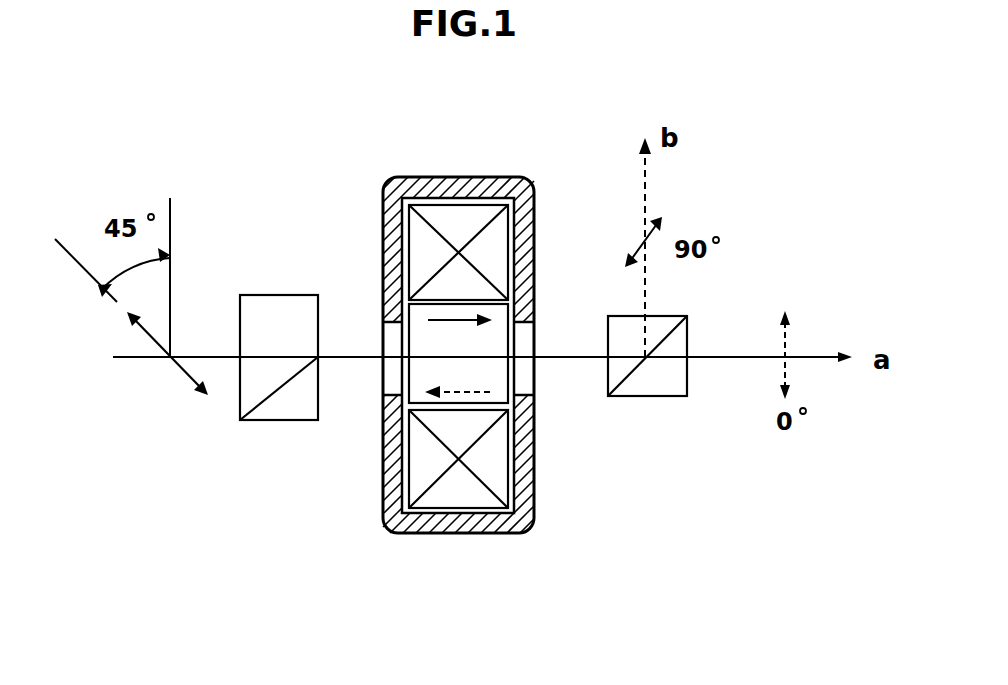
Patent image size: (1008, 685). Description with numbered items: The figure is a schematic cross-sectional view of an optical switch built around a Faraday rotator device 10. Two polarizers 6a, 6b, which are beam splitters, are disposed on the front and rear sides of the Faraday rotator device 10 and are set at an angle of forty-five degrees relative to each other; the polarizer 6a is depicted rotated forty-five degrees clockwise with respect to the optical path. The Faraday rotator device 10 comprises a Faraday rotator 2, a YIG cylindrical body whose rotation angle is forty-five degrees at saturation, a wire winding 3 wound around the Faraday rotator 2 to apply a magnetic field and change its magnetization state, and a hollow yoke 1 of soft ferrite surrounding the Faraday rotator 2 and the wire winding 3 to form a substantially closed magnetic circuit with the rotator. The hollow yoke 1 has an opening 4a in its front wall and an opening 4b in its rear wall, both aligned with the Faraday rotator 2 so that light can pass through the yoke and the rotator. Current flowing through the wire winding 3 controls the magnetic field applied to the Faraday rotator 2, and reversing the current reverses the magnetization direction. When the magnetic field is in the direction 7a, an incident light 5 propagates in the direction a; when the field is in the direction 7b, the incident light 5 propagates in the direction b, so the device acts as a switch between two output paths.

The hollow yoke 1 is at (432, 177).
The Faraday rotator 2 is at (415, 310).
The wire winding 3 is at (497, 482).
The opening 4a is at (392, 380).
The opening 4b is at (524, 368).
The incident light 5 is at (143, 360).
The polarizer 6a is at (288, 422).
The polarizer 6b is at (650, 388).
The magnetic field direction 7a is at (453, 320).
The magnetic field direction 7b is at (458, 390).
The Faraday rotator device 10 is at (543, 157).